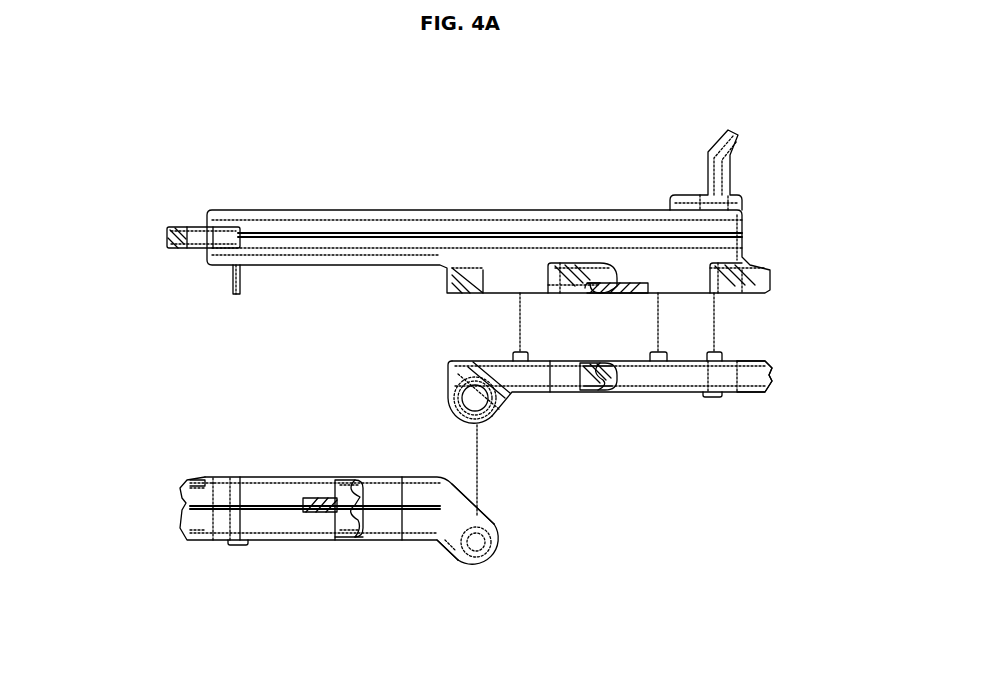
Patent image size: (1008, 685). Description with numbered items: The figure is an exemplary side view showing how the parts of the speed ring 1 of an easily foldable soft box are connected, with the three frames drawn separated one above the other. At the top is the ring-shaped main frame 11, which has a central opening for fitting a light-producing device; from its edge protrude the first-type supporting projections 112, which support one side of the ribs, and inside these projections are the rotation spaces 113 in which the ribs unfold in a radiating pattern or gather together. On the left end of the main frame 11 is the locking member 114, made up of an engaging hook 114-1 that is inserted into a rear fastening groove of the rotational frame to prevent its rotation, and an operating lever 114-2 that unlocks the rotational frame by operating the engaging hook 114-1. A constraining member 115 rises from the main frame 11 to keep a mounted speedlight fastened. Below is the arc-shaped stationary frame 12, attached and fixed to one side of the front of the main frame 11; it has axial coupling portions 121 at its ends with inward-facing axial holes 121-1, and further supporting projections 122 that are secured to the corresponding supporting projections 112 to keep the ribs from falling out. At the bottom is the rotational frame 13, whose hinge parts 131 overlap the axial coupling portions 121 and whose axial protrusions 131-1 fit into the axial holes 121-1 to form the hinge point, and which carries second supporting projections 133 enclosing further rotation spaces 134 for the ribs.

The speed ring 1 is at (224, 150).
The main frame 11 is at (417, 209).
The (1-1)th supporting projection 112 is at (582, 276).
The rotation space 113 is at (628, 283).
The locking member 114 is at (98, 296).
The engaging hook 114-1 is at (233, 292).
The operating lever 114-2 is at (166, 241).
The constraining member 115 is at (733, 170).
The stationary frame 12 is at (665, 397).
The axial coupling portion 121 is at (450, 376).
The axial hole 121-1 is at (468, 398).
The (1-2)th supporting projection 122 is at (775, 380).
The rotational frame 13 is at (260, 542).
The hinge part 131 is at (443, 550).
The axial protrusion 131-1 is at (502, 537).
The second supporting projection 133 is at (200, 480).
The rotation space 134 is at (310, 497).